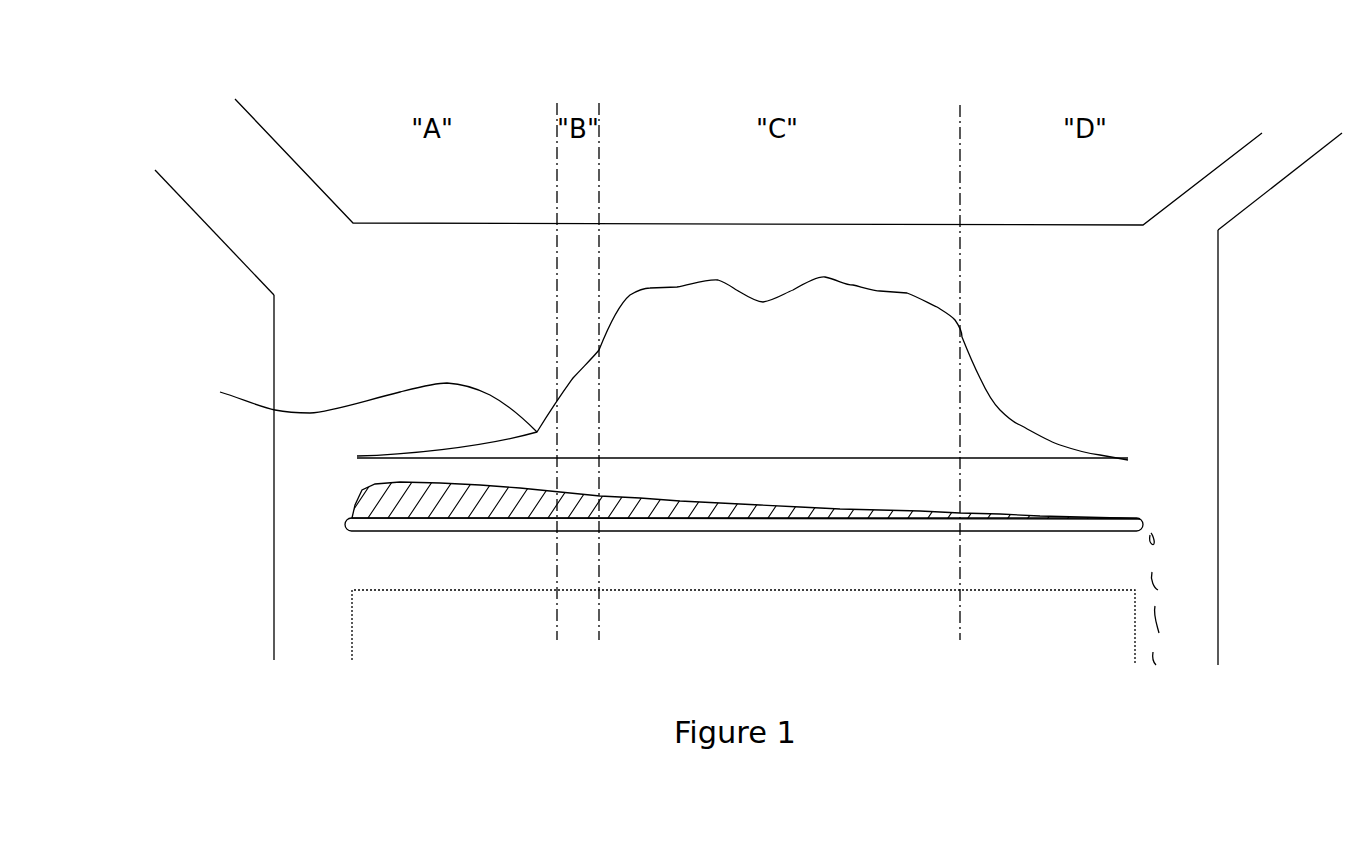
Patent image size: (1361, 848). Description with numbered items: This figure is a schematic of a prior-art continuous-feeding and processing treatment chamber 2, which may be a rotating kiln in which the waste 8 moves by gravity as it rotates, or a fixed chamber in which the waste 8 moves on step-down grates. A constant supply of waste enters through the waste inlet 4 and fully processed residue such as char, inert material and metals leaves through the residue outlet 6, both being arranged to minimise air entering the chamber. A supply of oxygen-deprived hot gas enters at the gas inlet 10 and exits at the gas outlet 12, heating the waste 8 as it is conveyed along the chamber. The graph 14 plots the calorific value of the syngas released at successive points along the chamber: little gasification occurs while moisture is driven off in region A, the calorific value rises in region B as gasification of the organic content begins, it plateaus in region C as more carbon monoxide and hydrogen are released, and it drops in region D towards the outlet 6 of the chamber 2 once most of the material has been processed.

The treatment chamber 2 is at (891, 225).
The waste inlet 4 is at (203, 155).
The residue outlet 6 is at (1185, 640).
The waste 8 is at (440, 503).
The gas inlet 10 is at (312, 638).
The gas outlet 12 is at (1270, 155).
The graph 14 is at (222, 393).